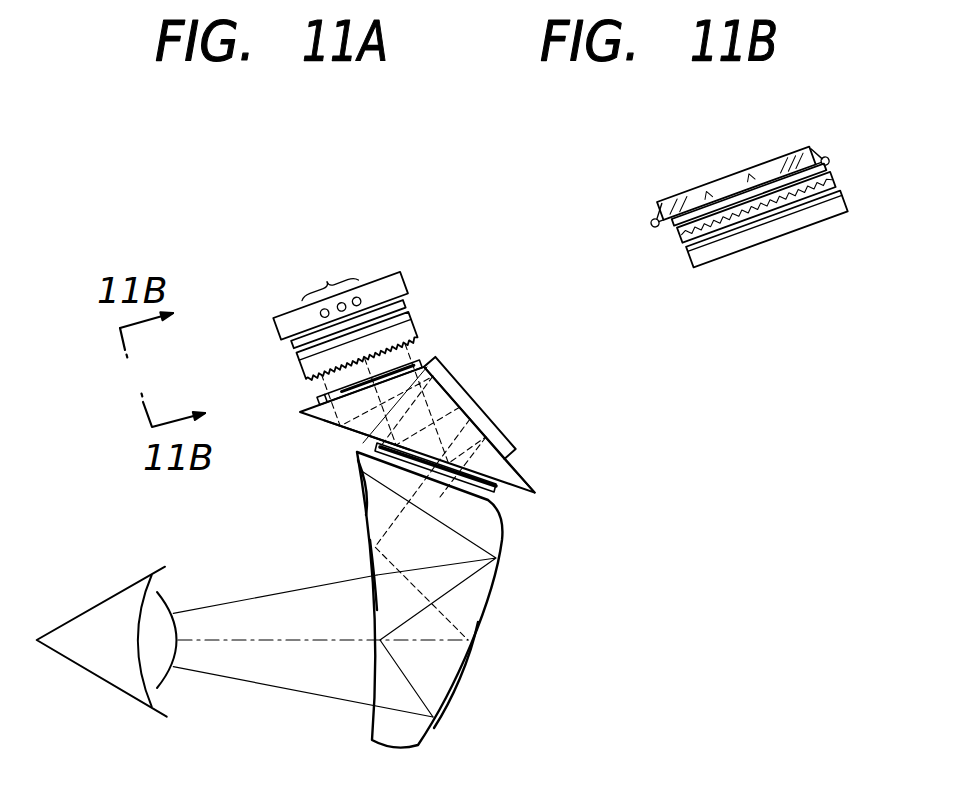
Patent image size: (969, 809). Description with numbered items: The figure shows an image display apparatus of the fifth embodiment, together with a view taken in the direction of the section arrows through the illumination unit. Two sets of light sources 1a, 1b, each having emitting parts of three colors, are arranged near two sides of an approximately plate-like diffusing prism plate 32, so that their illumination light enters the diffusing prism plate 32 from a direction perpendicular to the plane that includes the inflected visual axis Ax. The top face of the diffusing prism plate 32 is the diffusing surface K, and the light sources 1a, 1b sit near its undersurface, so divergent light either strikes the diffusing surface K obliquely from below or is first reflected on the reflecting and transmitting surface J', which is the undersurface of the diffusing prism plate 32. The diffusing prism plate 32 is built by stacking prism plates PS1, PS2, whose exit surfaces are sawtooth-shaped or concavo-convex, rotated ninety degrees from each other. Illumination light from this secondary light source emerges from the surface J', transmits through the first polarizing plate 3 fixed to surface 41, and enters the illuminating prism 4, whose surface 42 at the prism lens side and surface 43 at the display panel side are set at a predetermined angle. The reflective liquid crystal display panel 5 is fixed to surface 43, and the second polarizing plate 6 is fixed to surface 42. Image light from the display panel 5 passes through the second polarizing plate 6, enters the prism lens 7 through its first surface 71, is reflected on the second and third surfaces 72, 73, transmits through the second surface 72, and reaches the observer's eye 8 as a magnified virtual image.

In FIG. 11A, the light source 1a is at (306, 276).
In FIG. 11B, the light source 1a is at (653, 218).
In FIG. 11A, the light source 1b is at (333, 270).
In FIG. 11B, the light source 1b is at (829, 157).
In FIG. 11A, the first polarizing plate 3 is at (313, 397).
In FIG. 11A, the illuminating prism 4 is at (526, 468).
In FIG. 11A, the reflective liquid crystal display panel 5 is at (503, 428).
In FIG. 11A, the second polarizing plate 6 is at (506, 492).
In FIG. 11A, the prism lens 7 is at (474, 608).
In FIG. 11A, the observer's eye 8 is at (88, 676).
In FIG. 11A, the diffusing prism plate 32 is at (272, 321).
In FIG. 11B, the diffusing prism plate 32 is at (706, 171).
In FIG. 11A, the surface of the illuminating prism 41 is at (323, 404).
In FIG. 11A, the reflecting and transmitting surface 42 is at (347, 436).
In FIG. 11A, the transmitting surface 43 is at (533, 488).
In FIG. 11A, the first surface 71 is at (372, 483).
In FIG. 11A, the second surface 72 is at (374, 563).
In FIG. 11A, the third surface 73 is at (457, 689).
In FIG. 11A, the prism plate PS1 is at (407, 311).
In FIG. 11B, the prism plate PS1 is at (668, 229).
In FIG. 11A, the prism plate PS2 is at (418, 337).
In FIG. 11B, the prism plate PS2 is at (680, 264).
In FIG. 11A, the visual axis Ax is at (268, 650).
In FIG. 11B, the diffusing surface K is at (737, 170).
In FIG. 11B, the reflecting and transmitting surface J' is at (758, 228).